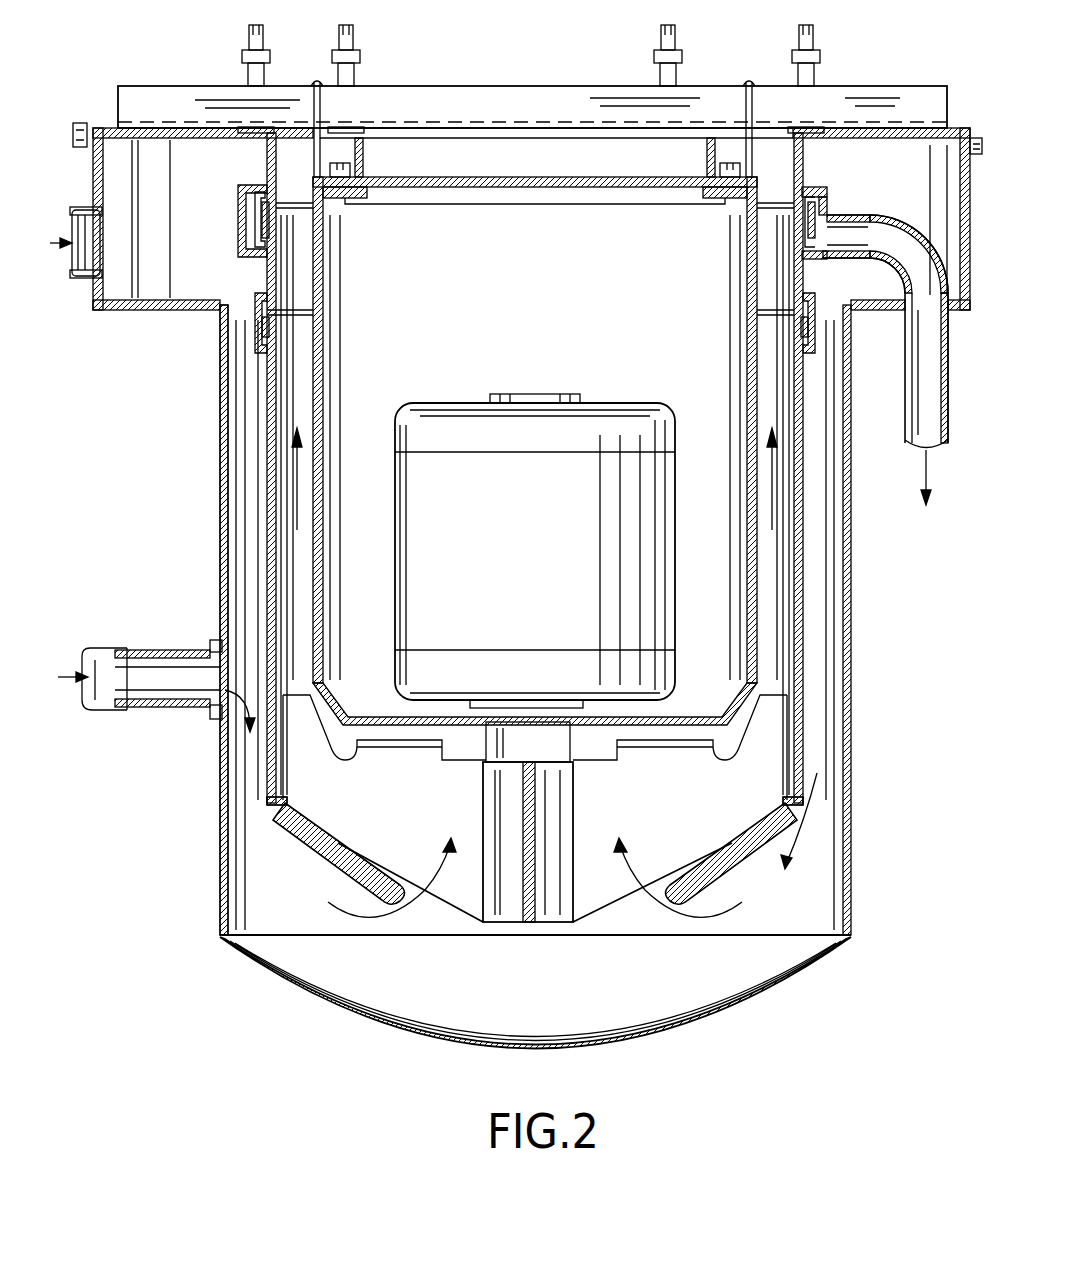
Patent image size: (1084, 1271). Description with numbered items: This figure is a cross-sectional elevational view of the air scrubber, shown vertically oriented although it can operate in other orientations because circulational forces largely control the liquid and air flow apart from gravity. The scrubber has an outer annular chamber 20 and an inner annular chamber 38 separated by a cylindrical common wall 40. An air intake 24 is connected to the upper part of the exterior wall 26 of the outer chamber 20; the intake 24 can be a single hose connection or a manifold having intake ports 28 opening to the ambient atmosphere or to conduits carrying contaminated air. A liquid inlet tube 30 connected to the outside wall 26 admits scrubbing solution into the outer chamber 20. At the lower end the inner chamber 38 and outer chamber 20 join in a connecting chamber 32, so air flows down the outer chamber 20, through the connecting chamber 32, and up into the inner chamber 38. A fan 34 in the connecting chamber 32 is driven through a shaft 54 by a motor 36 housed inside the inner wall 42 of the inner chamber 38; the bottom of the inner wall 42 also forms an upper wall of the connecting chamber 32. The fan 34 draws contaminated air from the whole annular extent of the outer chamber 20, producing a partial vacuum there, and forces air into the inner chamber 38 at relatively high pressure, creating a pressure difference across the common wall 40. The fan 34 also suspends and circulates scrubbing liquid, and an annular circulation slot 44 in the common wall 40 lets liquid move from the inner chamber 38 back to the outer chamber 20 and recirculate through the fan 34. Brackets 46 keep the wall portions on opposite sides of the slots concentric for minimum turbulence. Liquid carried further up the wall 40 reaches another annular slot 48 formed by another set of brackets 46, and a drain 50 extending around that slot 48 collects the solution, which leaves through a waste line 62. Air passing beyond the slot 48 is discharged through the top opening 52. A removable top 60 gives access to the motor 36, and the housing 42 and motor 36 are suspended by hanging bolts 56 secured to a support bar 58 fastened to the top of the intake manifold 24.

The outer annular chamber 20 is at (245, 428).
The air intake 24 is at (157, 282).
The exterior wall 26 is at (222, 463).
The intake port 28 is at (85, 278).
The liquid inlet tube 30 is at (118, 710).
The connecting chamber 32 is at (290, 818).
The fan 34 is at (343, 813).
The motor 36 is at (655, 590).
The inner annular chamber 38 is at (290, 538).
The common wall 40 is at (272, 550).
The inner wall 42 is at (310, 585).
The annular circulation slot 44 is at (262, 345).
The brackets 46 is at (258, 293).
The annular slot 48 is at (257, 238).
The drain 50 is at (240, 192).
The top opening 52 is at (293, 143).
The shaft 54 is at (548, 745).
The hanging bolts 56 is at (337, 113).
The support bar 58 is at (898, 100).
The removable top 60 is at (500, 177).
The waste line 62 is at (950, 407).